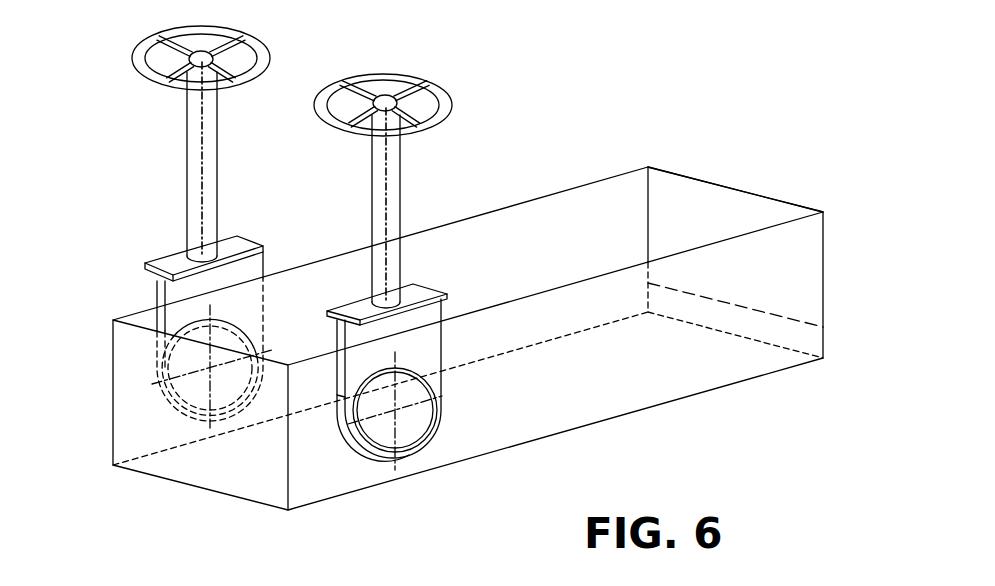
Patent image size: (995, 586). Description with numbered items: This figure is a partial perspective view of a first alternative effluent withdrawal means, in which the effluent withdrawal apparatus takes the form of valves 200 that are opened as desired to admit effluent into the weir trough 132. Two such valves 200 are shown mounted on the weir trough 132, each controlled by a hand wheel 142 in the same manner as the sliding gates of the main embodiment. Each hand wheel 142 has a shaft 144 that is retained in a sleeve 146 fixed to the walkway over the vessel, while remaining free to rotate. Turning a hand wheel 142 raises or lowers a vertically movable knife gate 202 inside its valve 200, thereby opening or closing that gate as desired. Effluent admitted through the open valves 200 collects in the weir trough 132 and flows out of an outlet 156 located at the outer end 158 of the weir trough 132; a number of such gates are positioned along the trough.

The weir trough 132 is at (523, 206).
The hand wheels 142 is at (267, 43).
The shafts 144 is at (210, 188).
The sleeves 146 is at (187, 147).
The outlet 156 is at (812, 343).
The outer end 158 is at (727, 190).
The valves 200 is at (153, 363).
The knife gate 202 is at (170, 397).